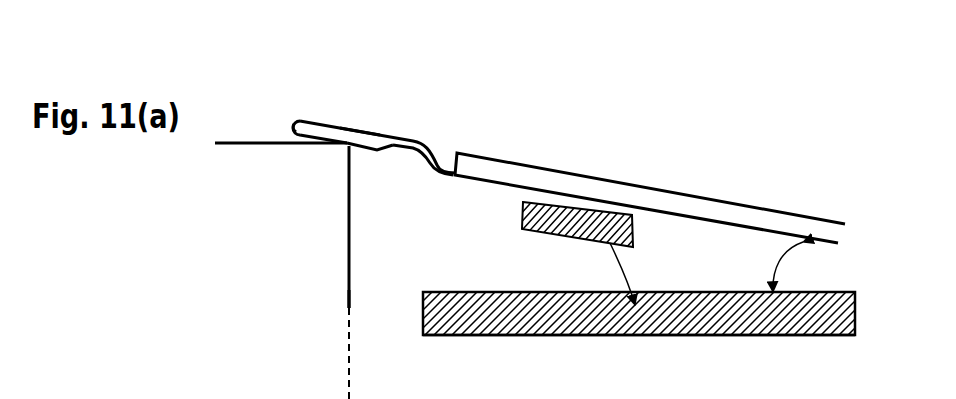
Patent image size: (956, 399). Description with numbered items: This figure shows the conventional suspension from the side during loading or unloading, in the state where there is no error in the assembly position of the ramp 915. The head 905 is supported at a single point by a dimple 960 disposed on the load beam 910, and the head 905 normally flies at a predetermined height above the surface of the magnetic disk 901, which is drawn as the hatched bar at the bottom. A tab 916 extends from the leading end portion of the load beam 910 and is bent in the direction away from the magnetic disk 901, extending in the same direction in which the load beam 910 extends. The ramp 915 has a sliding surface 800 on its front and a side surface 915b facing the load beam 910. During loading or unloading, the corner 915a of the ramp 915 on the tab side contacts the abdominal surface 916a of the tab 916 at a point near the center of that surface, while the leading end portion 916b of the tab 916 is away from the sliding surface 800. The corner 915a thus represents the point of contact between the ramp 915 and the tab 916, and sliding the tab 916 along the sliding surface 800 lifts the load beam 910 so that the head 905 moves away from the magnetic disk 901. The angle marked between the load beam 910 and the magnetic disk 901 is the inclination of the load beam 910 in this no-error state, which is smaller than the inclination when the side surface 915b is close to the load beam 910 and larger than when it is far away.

The sliding surface 800 is at (235, 142).
The tab 916 is at (329, 122).
The abdominal surface 916a is at (366, 131).
The tip of hook 916b is at (293, 125).
The ramp 915 is at (243, 213).
The corner 915a is at (352, 152).
The side surface 915b is at (352, 298).
The load beam 910 is at (697, 178).
The dimple 960 is at (573, 203).
The head 905 is at (617, 323).
The magnetic disk 901 is at (770, 337).